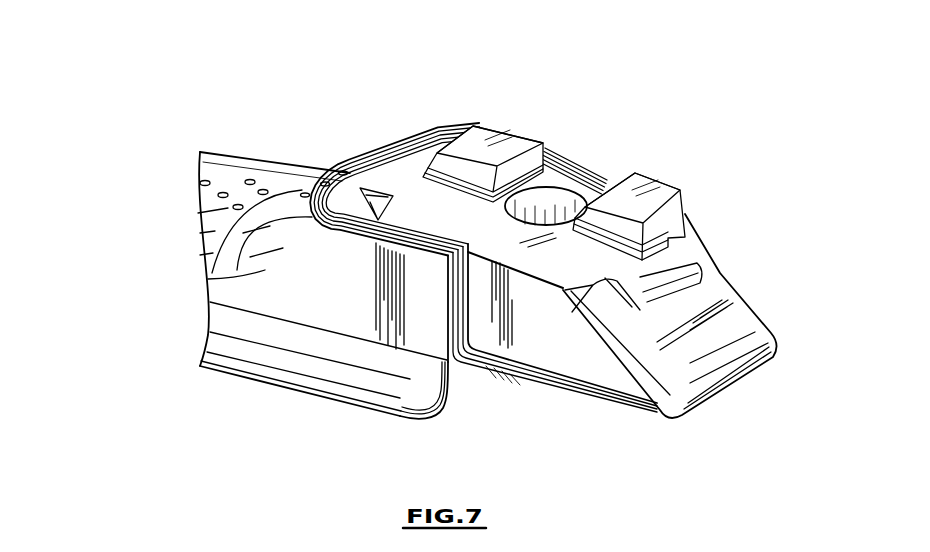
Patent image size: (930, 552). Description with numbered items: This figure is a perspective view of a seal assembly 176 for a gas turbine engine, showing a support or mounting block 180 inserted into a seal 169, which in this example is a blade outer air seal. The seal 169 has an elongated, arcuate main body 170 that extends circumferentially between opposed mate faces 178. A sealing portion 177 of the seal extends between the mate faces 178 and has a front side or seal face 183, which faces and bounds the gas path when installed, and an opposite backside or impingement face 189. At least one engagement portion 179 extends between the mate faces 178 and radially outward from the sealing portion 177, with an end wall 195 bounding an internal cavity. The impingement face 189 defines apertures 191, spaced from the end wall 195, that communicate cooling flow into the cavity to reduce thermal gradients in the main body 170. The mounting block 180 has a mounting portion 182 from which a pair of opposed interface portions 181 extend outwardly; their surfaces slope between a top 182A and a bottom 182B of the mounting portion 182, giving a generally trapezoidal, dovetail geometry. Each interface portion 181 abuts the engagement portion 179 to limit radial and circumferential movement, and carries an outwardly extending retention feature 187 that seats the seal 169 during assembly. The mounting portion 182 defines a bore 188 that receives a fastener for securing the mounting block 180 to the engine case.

The seal assembly 176 is at (180, 70).
The seal 169 is at (268, 150).
The impingement face 189 is at (222, 180).
The main body 170 is at (202, 205).
The apertures 191 is at (342, 171).
The retention feature 187 is at (402, 173).
The end wall 195 is at (405, 132).
The engagement portion 179 is at (438, 132).
The mounting portion 182 is at (562, 185).
The bore 188 is at (562, 203).
The mounting block 180 is at (688, 178).
The interface portion 181 is at (347, 220).
The top of the mounting portion 182A is at (545, 263).
The bottom of the mounting portion 182B is at (622, 405).
The sealing portion 177 is at (330, 370).
The mate faces 178 is at (452, 395).
The seal face 183 is at (433, 419).